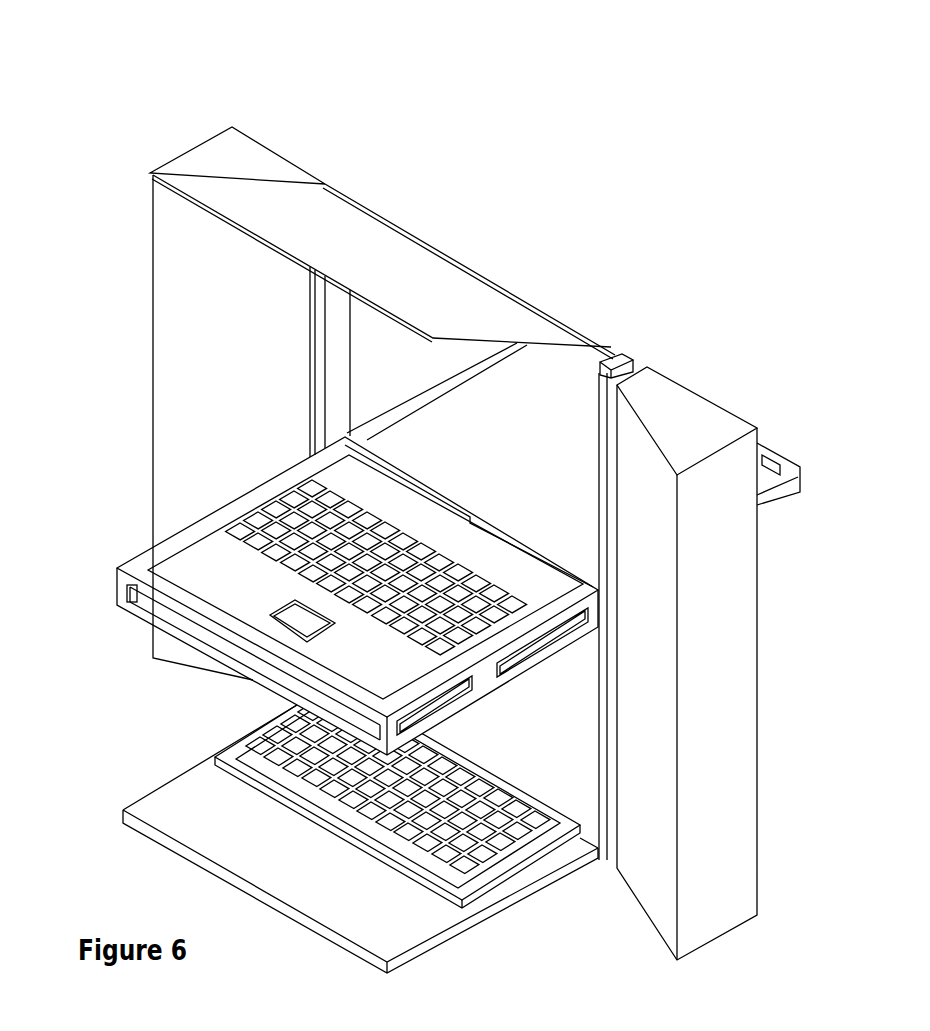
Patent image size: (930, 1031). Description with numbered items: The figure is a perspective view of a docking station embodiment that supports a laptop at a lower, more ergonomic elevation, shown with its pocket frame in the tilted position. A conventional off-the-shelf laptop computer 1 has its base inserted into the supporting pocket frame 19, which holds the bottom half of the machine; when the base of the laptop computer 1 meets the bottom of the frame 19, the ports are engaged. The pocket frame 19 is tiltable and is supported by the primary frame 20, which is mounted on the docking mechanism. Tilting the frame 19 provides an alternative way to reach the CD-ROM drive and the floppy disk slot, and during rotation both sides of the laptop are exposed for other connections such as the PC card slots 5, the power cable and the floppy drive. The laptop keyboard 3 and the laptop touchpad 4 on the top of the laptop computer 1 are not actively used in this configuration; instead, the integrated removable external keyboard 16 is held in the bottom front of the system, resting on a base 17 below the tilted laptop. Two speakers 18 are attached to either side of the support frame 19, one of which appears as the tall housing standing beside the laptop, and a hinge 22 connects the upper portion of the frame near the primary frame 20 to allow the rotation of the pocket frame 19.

The laptop computer 1 is at (227, 580).
The laptop keyboard 3 is at (350, 527).
The laptop touchpad 4 is at (297, 622).
The PC card slots 5 is at (552, 660).
The integrated removable external keyboard 16 is at (262, 748).
The base plate 17 is at (322, 868).
The speakers 18 is at (253, 138).
The supporting pocket frame 19 is at (278, 472).
The primary frame 20 is at (240, 227).
The hinge 22 is at (560, 322).